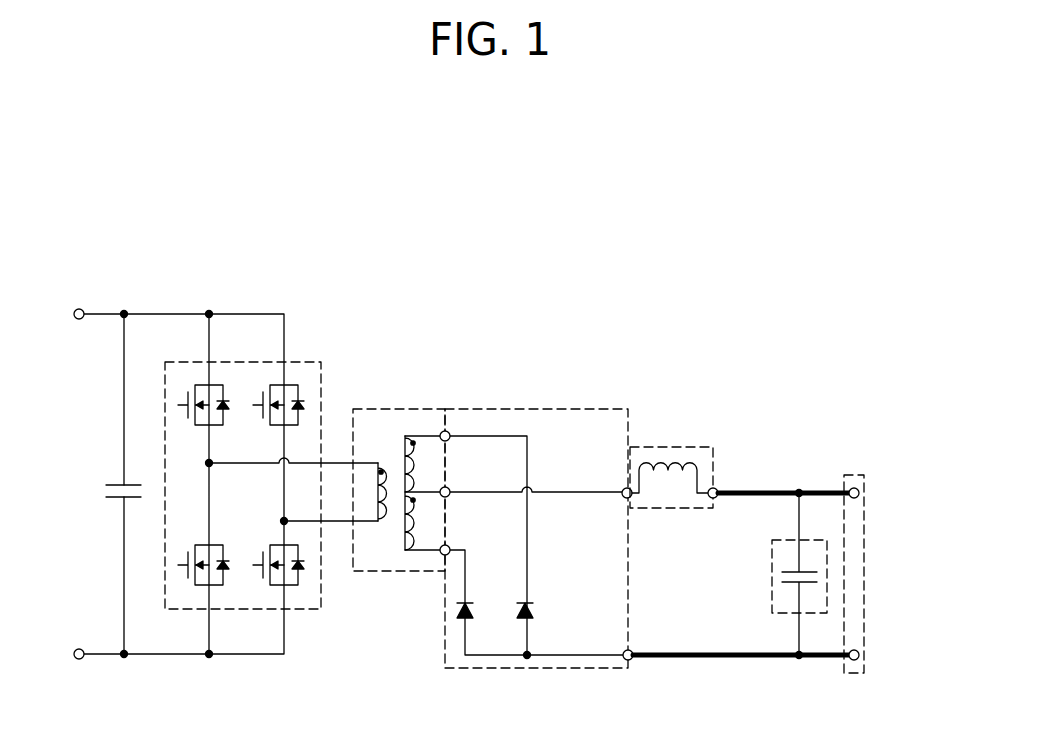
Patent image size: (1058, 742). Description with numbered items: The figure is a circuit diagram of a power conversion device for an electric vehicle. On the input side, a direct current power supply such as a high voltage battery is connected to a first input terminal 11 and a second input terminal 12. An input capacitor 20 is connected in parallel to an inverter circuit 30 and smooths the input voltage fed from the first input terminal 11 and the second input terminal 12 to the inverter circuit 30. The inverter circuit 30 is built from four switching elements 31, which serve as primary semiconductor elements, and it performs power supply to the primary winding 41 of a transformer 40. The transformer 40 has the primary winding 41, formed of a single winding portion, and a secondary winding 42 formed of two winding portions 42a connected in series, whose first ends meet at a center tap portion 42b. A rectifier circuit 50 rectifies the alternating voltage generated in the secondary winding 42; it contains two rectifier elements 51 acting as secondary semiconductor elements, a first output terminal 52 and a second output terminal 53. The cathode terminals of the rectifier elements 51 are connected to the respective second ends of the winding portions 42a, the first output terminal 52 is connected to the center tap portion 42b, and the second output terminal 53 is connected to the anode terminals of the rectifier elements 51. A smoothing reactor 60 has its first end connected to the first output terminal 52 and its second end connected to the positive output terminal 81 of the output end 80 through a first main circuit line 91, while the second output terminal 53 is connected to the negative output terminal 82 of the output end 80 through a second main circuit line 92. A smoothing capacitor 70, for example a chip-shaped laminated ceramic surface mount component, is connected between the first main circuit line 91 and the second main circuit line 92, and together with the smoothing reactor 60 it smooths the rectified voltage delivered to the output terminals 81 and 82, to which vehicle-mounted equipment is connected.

The first input terminal 11 is at (82, 308).
The second input terminal 12 is at (77, 661).
The input capacitor 20 is at (116, 485).
The inverter circuit 30 is at (320, 361).
The switching element 31 is at (214, 385).
The transformer 40 is at (398, 408).
The primary winding 41 is at (390, 516).
The secondary winding 42 is at (406, 470).
The winding portion 42a is at (398, 437).
The center tap portion 42b is at (432, 493).
The rectifier circuit 50 is at (513, 408).
The rectifier element 51 is at (469, 611).
The first output terminal 52 is at (626, 488).
The second output terminal 53 is at (628, 661).
The smoothing reactor 60 is at (670, 445).
The smoothing capacitor 70 is at (772, 565).
The output end 80 is at (866, 549).
The output terminal 81 is at (856, 488).
The output terminal 82 is at (856, 661).
The first main circuit line 91 is at (779, 490).
The second main circuit line 92 is at (755, 660).